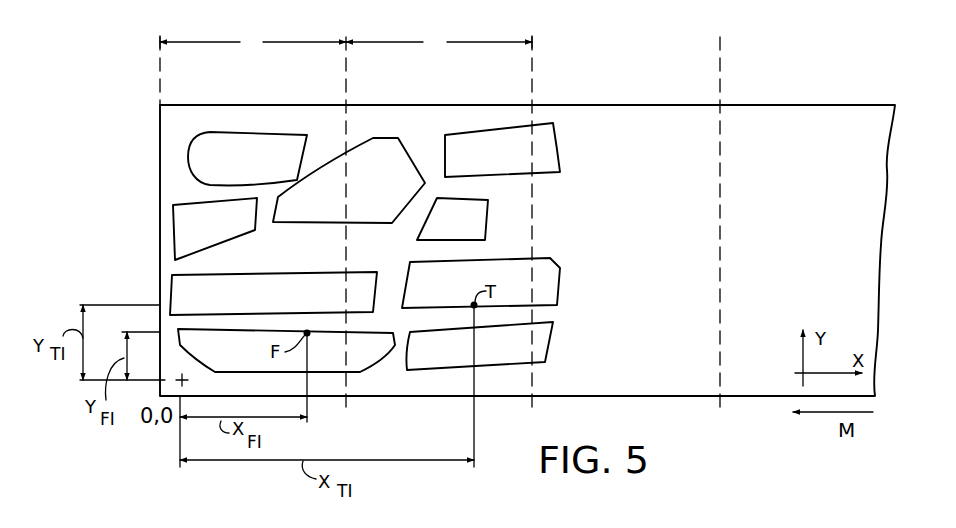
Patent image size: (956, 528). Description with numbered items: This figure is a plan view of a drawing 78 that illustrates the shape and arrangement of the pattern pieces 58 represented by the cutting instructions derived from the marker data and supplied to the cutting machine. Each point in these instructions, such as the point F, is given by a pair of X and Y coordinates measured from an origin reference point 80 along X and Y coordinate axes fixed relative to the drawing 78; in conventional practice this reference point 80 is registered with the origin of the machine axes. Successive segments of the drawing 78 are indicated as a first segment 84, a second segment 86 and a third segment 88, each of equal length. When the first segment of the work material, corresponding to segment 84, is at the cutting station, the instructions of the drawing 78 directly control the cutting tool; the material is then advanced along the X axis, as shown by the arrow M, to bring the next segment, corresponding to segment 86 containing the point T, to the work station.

The drawing 78 is at (604, 70).
The origin reference point 80 is at (172, 397).
The first segment of the drawing 84 is at (262, 117).
The second segment of the drawing 86 is at (444, 117).
The third segment of the drawing 88 is at (629, 117).
The pattern pieces 58 is at (500, 163).